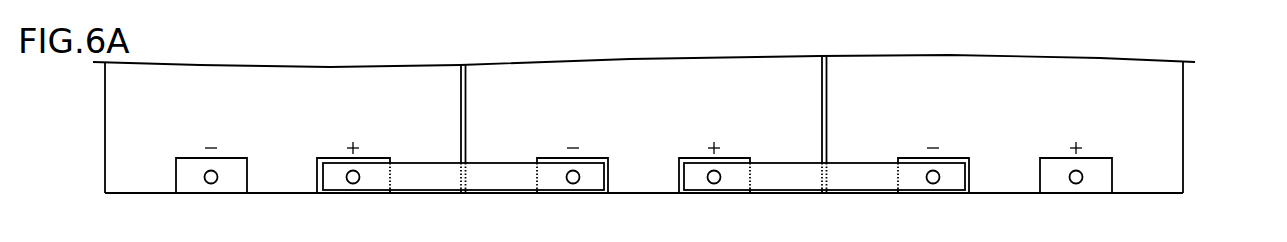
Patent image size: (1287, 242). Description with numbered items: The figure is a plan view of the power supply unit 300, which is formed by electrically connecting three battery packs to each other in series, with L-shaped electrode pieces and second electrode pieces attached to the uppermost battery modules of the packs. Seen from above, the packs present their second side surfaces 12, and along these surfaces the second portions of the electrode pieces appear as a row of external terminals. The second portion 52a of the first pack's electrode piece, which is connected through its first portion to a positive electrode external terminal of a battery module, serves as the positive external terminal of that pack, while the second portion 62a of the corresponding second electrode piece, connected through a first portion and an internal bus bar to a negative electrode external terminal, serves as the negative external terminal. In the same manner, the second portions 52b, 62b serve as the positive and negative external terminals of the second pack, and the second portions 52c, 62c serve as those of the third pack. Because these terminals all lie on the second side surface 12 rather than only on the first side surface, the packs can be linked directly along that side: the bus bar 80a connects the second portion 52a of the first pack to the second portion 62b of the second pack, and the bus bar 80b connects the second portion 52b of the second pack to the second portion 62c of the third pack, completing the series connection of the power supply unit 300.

The power supply unit 300 is at (1206, 82).
The second side surface 12 is at (1168, 116).
The bus bar 80a is at (499, 170).
The bus bar 80b is at (863, 172).
The second portion 52a is at (367, 185).
The second portion 52b is at (731, 183).
The second portion 52c is at (1093, 185).
The second portion 62a is at (225, 185).
The second portion 62b is at (589, 184).
The second portion 62c is at (950, 185).